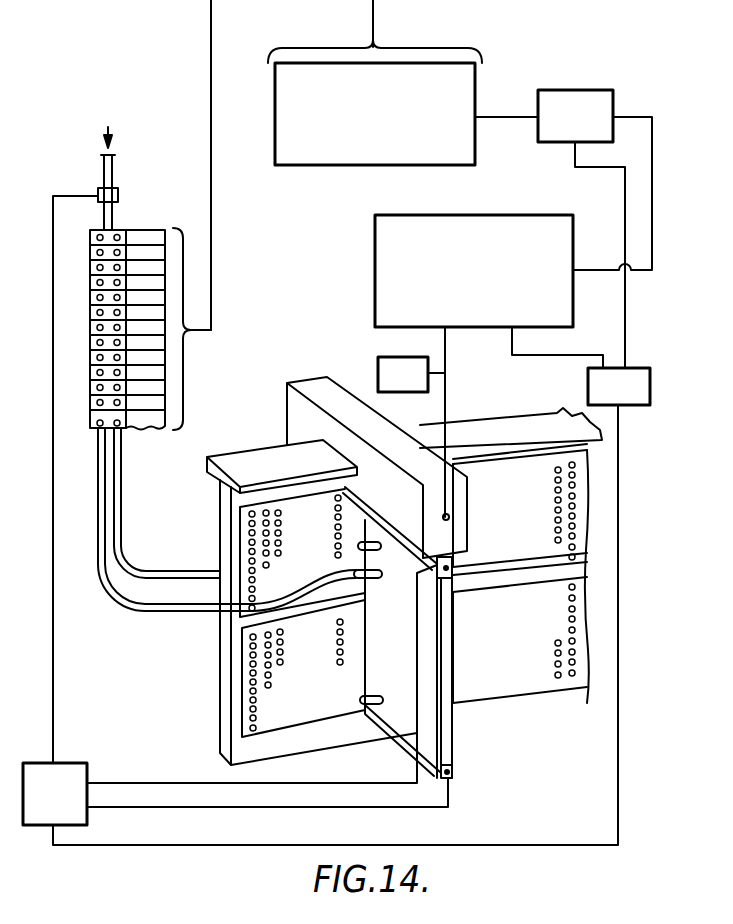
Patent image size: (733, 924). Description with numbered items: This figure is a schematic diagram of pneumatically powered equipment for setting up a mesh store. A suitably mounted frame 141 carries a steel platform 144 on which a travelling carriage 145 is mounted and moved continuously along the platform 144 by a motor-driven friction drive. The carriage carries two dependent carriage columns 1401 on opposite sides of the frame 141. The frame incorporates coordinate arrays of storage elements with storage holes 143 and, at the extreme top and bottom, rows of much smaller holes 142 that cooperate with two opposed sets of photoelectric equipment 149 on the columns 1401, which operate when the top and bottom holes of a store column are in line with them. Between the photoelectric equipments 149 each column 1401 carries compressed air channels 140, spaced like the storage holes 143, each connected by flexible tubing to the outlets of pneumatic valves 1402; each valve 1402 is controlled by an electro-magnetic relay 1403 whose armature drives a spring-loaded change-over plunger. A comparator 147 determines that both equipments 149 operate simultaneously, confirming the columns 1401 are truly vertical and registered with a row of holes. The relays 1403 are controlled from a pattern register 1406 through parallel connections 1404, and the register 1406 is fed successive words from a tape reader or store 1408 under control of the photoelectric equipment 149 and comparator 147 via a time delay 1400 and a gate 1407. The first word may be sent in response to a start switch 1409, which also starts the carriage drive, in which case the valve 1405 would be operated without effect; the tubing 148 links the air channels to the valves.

The compressed air channel 140 is at (372, 542).
The frame 141 is at (221, 683).
The top and bottom rows of holes 142 is at (337, 492).
The storage holes 143 is at (269, 566).
The steel platform 144 is at (247, 455).
The travelling carriage 145 is at (329, 382).
The comparator 147 is at (235, 695).
The tube 148 is at (103, 546).
The photoelectric equipment 149 is at (407, 557).
The time delay 1400 is at (619, 386).
The carriage column 1401 is at (449, 658).
The pneumatic valve 1402 is at (90, 250).
The electro-magnetic relay 1403 is at (144, 238).
The parallel connections 1404 is at (213, 213).
The valve 1405 is at (118, 194).
The pattern register 1406 is at (375, 114).
The gate 1407 is at (575, 116).
The tape reader or store 1408 is at (474, 271).
The start switch 1409 is at (411, 374).